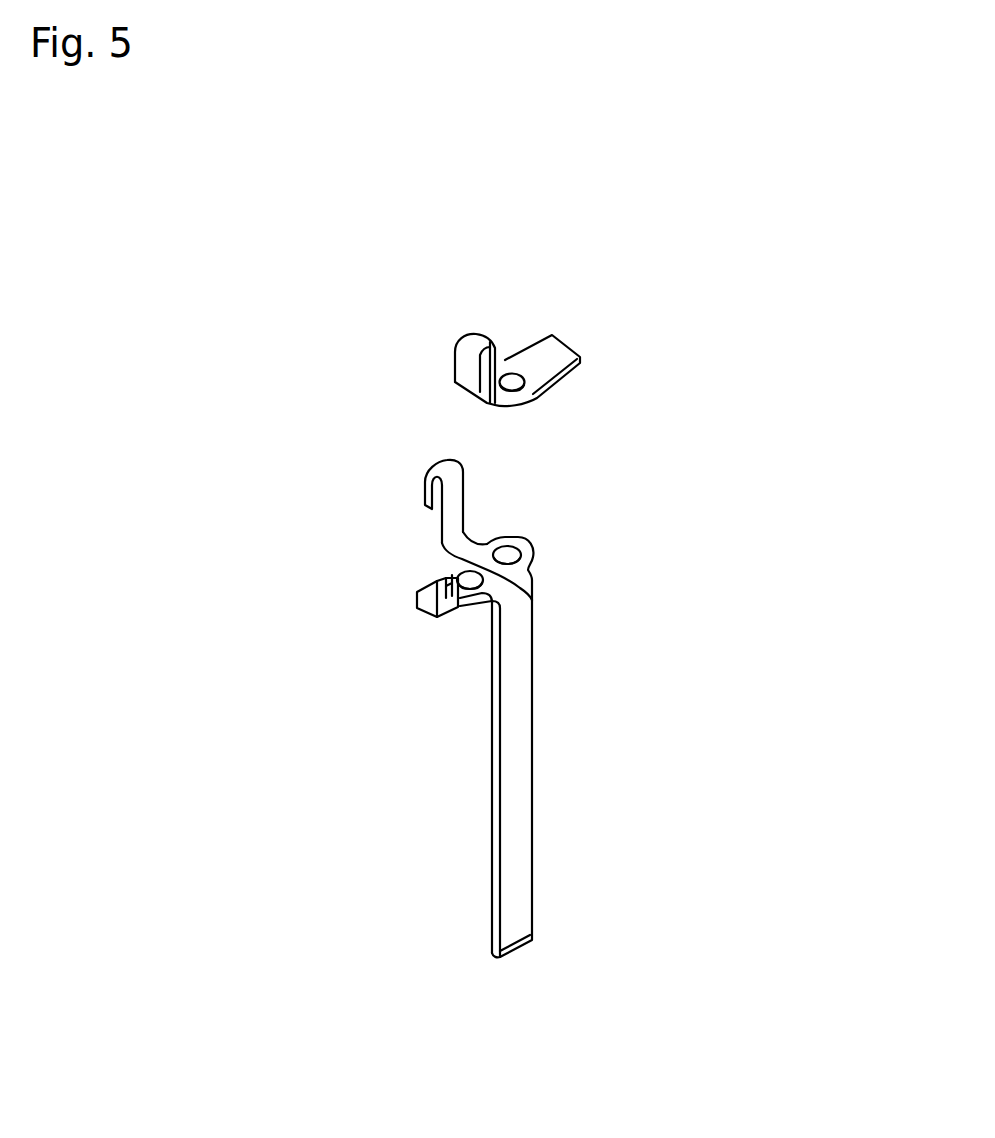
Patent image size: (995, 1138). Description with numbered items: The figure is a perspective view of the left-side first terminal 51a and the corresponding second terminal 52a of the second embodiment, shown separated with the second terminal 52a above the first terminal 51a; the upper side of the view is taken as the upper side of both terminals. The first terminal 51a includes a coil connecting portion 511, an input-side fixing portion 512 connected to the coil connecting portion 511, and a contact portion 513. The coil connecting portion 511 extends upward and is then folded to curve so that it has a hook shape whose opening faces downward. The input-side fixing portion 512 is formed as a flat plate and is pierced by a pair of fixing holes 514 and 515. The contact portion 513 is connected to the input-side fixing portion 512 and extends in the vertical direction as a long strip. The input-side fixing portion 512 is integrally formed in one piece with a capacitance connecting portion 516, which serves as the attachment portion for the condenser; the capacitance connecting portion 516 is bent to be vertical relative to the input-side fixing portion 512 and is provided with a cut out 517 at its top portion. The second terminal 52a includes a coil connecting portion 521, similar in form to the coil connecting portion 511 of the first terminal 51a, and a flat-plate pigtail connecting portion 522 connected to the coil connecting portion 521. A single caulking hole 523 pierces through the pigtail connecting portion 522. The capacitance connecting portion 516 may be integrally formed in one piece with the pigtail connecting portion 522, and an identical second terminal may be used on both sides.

The second terminal 52a is at (498, 318).
The coil connecting portion 521 is at (460, 365).
The pigtail connecting portion 522 is at (542, 360).
The caulking hole 523 is at (513, 375).
The first terminal 51a is at (348, 728).
The coil connecting portion 511 is at (423, 490).
The input-side fixing portion 512 is at (433, 558).
The contact portion 513 is at (527, 720).
The fixing hole 514 is at (512, 548).
The fixing hole 515 is at (483, 569).
The capacitance connecting portion 516 is at (423, 615).
The cut out 517 is at (421, 588).